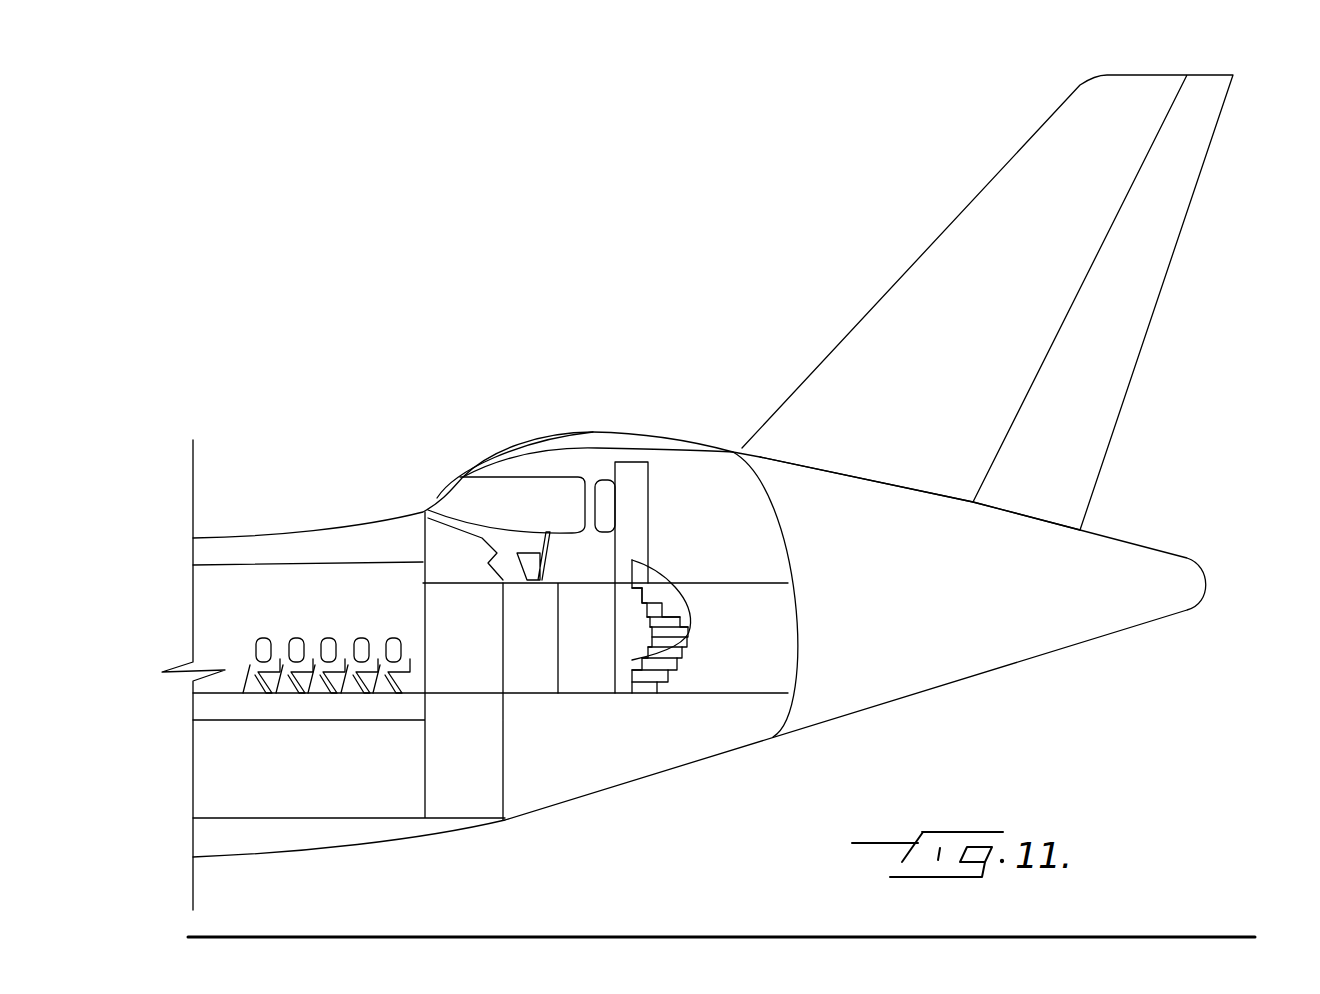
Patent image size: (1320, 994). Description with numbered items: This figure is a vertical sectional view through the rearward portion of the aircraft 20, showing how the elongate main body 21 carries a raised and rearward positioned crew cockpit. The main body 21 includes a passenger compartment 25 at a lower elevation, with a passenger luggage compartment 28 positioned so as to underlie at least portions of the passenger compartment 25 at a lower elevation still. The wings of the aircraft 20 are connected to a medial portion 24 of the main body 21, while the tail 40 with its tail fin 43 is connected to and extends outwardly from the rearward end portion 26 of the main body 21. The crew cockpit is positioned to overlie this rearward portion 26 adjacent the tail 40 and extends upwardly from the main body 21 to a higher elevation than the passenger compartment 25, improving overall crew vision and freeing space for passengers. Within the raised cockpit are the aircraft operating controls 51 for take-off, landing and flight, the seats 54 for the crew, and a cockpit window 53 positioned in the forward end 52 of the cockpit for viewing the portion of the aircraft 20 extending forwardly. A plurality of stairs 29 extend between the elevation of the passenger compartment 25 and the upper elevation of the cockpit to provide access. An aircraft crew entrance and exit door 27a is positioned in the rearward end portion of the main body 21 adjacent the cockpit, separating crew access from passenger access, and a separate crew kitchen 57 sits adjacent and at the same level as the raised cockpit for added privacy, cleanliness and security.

The aircraft 20 is at (383, 237).
The main body 21 is at (213, 537).
The medial portion 24 is at (262, 566).
The passenger compartment 25 is at (259, 613).
The rearward end portion 26 is at (374, 553).
The aircraft crew entrance and exit door 27a is at (518, 651).
The passenger luggage compartment 28 is at (262, 783).
The stairs 29 is at (690, 628).
The tail 40 is at (1165, 462).
The tail fin 43 is at (932, 362).
The aircraft operating controls 51 is at (442, 566).
The forward end of the raised crew cockpit 52 is at (513, 466).
The cockpit window 53 is at (487, 516).
The seats 54 is at (550, 556).
The kitchen 57 is at (680, 533).